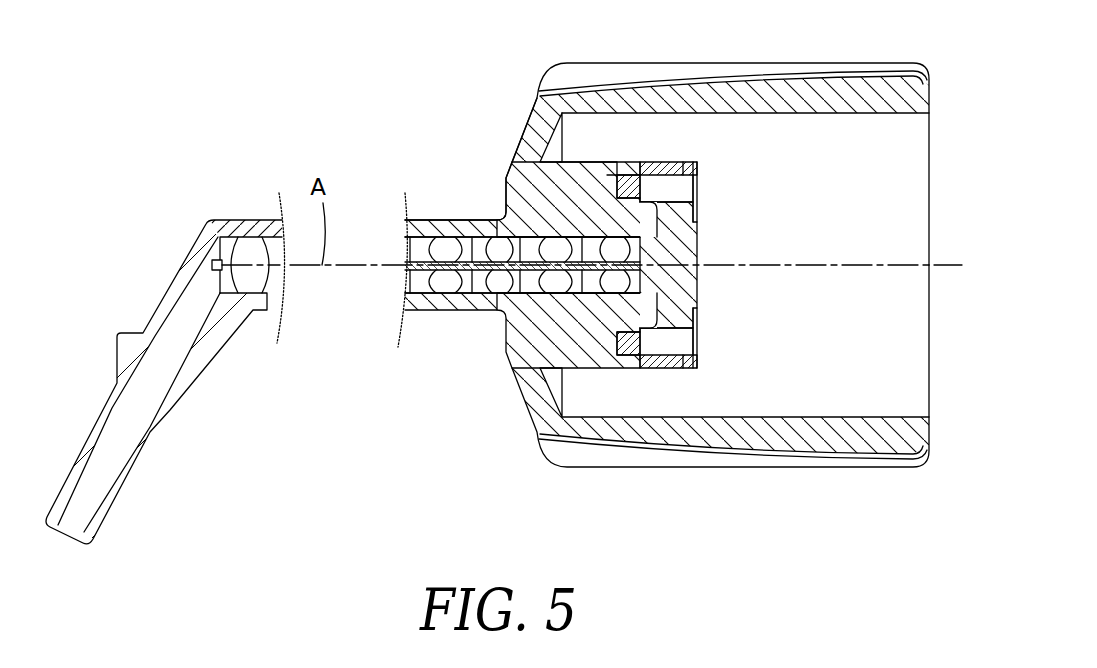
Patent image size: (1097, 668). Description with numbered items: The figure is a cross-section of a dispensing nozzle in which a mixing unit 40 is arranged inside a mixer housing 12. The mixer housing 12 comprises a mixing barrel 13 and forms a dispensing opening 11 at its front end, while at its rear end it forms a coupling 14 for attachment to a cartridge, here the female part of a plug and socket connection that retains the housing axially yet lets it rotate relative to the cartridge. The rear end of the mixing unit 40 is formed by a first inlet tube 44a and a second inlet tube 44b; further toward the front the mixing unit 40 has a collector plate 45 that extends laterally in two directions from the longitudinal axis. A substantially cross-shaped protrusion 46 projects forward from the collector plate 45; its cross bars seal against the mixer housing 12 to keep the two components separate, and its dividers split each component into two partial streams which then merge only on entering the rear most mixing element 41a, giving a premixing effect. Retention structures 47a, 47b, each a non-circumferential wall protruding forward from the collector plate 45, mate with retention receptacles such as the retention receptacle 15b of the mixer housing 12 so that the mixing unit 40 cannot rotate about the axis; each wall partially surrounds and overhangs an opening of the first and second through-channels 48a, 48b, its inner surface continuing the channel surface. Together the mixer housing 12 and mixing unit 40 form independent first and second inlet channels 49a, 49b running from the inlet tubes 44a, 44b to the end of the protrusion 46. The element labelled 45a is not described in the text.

The dispensing opening 11 is at (66, 538).
The mixer housing 12 is at (847, 84).
The mixing barrel 13 is at (433, 311).
The coupling 14 is at (860, 416).
The retention receptacle 15b is at (611, 345).
The mixing unit 40 is at (392, 229).
The rear most mixing element 41a is at (605, 212).
The first inlet tube 44a is at (690, 162).
The second inlet tube 44b is at (690, 358).
The collector plate 45 is at (664, 164).
The retainer flange 45a is at (610, 178).
The substantially cross-shaped protrusion 46 is at (602, 282).
The first retention structure 47a is at (632, 184).
The second retention structure 47b is at (633, 350).
The first through-channel 48a is at (681, 187).
The second through-channel 48b is at (681, 342).
The first inlet channel 49a is at (697, 208).
The second inlet channel 49b is at (697, 320).